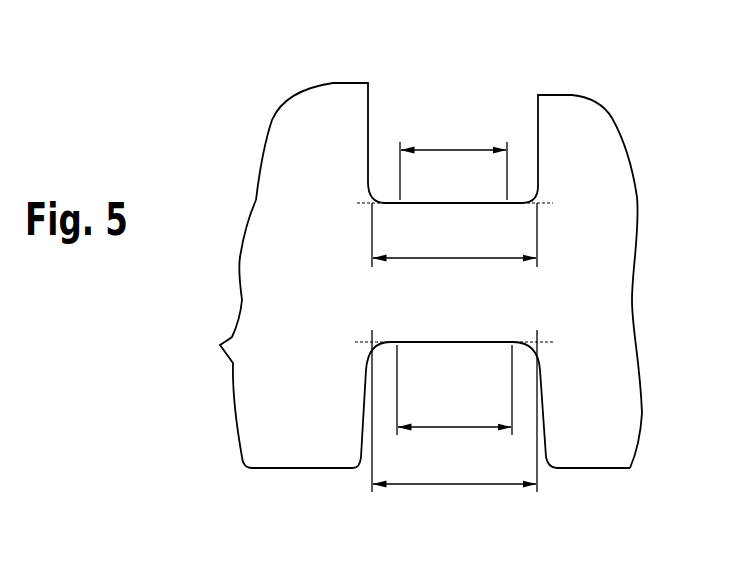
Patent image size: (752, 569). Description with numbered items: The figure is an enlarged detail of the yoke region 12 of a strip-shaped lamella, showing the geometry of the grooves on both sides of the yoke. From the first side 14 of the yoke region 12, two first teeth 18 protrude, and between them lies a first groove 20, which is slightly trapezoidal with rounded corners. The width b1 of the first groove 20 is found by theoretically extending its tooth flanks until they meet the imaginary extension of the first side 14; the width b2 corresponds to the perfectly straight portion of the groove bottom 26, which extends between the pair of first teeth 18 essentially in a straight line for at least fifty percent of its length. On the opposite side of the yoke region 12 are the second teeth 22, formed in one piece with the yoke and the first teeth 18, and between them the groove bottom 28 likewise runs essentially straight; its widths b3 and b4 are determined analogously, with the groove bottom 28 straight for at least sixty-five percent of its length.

The yoke region 12 is at (584, 283).
The first side 14 is at (426, 196).
The first teeth 18 is at (352, 117).
The first grooves 20 is at (482, 122).
The second teeth 22 is at (298, 430).
The groove bottom 26 is at (483, 196).
The groove bottom 28 is at (477, 348).